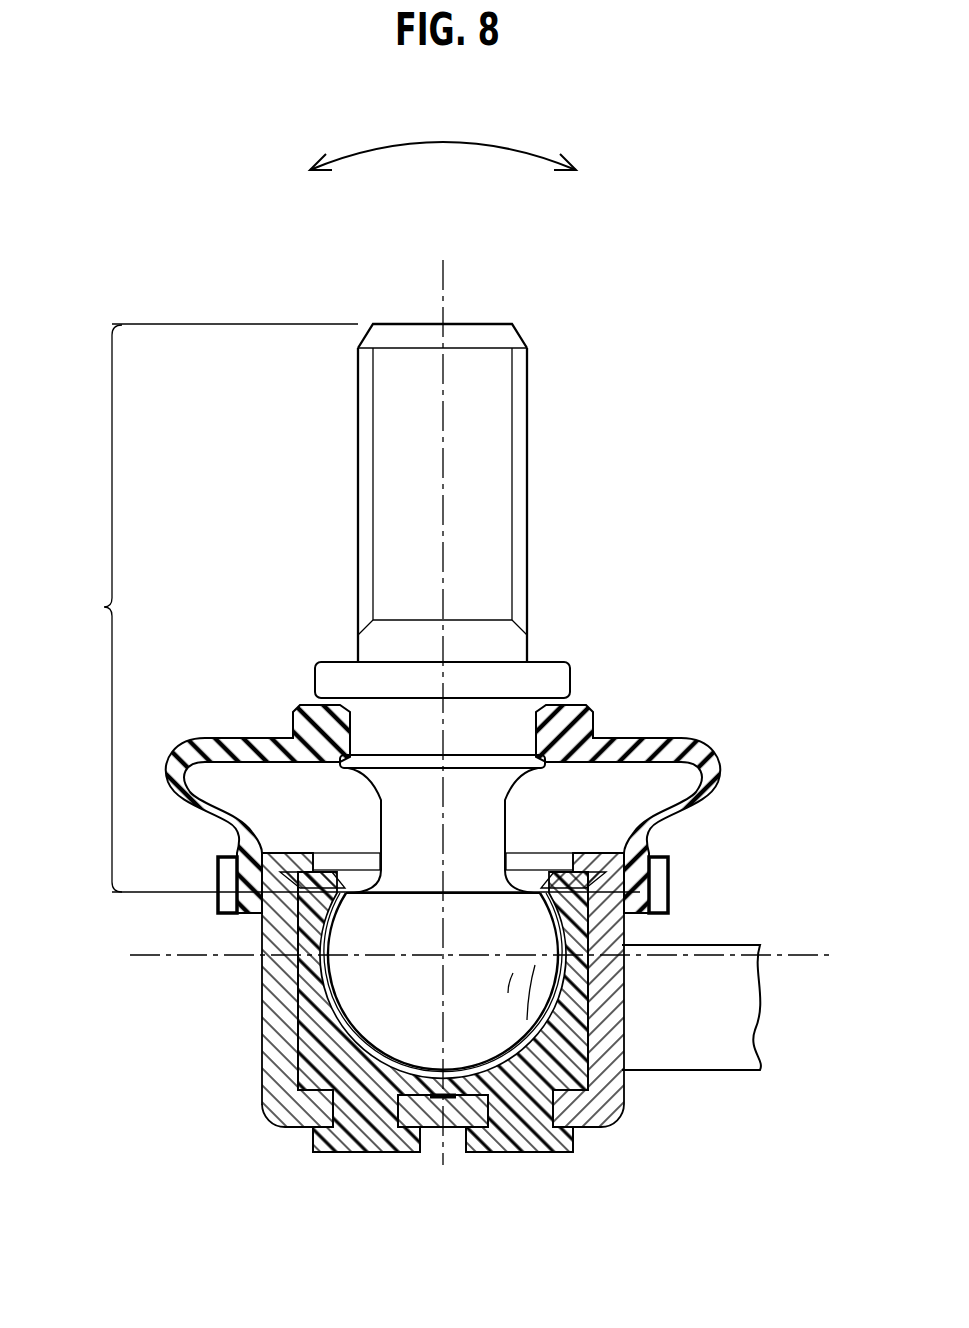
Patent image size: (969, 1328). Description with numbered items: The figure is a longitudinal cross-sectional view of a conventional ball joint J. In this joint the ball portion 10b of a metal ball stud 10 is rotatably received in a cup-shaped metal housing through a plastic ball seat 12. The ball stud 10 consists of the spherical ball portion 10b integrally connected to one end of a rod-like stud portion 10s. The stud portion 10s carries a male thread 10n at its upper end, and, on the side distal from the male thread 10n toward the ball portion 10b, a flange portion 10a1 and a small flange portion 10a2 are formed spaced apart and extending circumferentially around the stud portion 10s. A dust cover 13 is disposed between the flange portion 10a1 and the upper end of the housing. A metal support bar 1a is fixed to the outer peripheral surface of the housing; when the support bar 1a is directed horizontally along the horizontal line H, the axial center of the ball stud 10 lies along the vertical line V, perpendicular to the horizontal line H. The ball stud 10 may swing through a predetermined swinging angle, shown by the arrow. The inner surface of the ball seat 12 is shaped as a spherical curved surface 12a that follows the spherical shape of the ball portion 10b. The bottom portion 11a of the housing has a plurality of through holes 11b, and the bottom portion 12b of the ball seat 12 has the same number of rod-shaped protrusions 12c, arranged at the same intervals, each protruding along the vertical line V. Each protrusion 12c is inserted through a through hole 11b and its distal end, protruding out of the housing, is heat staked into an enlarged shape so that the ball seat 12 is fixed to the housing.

The ball stud 10 is at (464, 749).
The male thread 10n is at (527, 396).
The stud portion 10s is at (345, 608).
The flange portion 10a1 is at (570, 680).
The small flange portion 10a2 is at (405, 762).
The ball portion 10b is at (477, 1010).
The bottom portion of the housing 11a is at (453, 1120).
The through holes 11b is at (352, 1142).
The ball seat 12 is at (310, 988).
The spherical curved surface 12a is at (345, 1012).
The bottom portion of the ball seat 12b is at (427, 1100).
The protrusions 12c is at (353, 1153).
The dust cover 13 is at (720, 775).
The support bar 1a is at (697, 1070).
The ball joint J is at (250, 1081).
The horizontal line H is at (805, 952).
The vertical line V is at (443, 285).